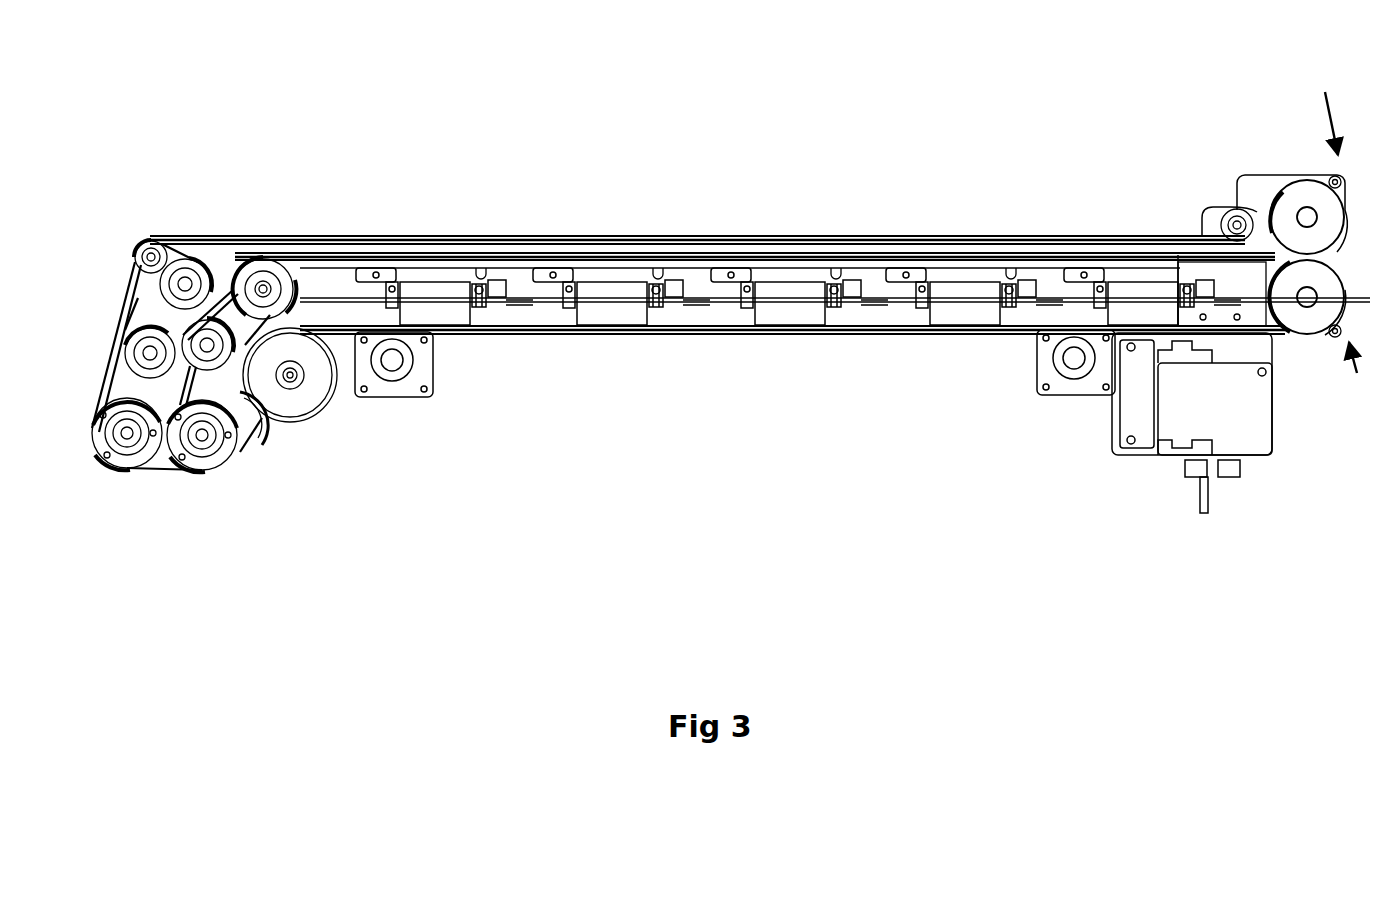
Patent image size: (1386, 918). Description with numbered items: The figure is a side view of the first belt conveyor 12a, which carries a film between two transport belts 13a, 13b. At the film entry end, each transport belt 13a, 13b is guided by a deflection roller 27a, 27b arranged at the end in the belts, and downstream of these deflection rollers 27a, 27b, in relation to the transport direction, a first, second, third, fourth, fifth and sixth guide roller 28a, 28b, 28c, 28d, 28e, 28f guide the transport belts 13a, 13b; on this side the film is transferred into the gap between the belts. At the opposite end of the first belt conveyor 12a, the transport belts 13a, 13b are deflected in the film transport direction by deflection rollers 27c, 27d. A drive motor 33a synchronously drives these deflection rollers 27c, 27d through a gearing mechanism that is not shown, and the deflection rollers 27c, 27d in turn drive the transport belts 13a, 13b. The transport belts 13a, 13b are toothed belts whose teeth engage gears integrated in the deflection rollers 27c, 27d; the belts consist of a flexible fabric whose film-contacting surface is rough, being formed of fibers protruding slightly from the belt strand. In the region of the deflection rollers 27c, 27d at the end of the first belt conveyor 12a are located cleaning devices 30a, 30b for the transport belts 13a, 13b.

The first belt conveyor 12a is at (605, 128).
The transport belt 13a is at (665, 242).
The transport belt 13b is at (1170, 236).
The deflection roller 27a is at (132, 463).
The deflection roller 27b is at (230, 450).
The deflection roller 27c is at (1310, 192).
The deflection roller 27d is at (1323, 334).
The first guide roller 28a is at (160, 243).
The second guide roller 28b is at (205, 267).
The third guide roller 28c is at (131, 330).
The fourth guide roller 28d is at (285, 268).
The fifth guide roller 28e is at (270, 420).
The sixth guide roller 28f is at (310, 407).
The cleaning device 30a is at (1331, 104).
The cleaning device 30b is at (1367, 375).
The drive motor 33a is at (1197, 418).